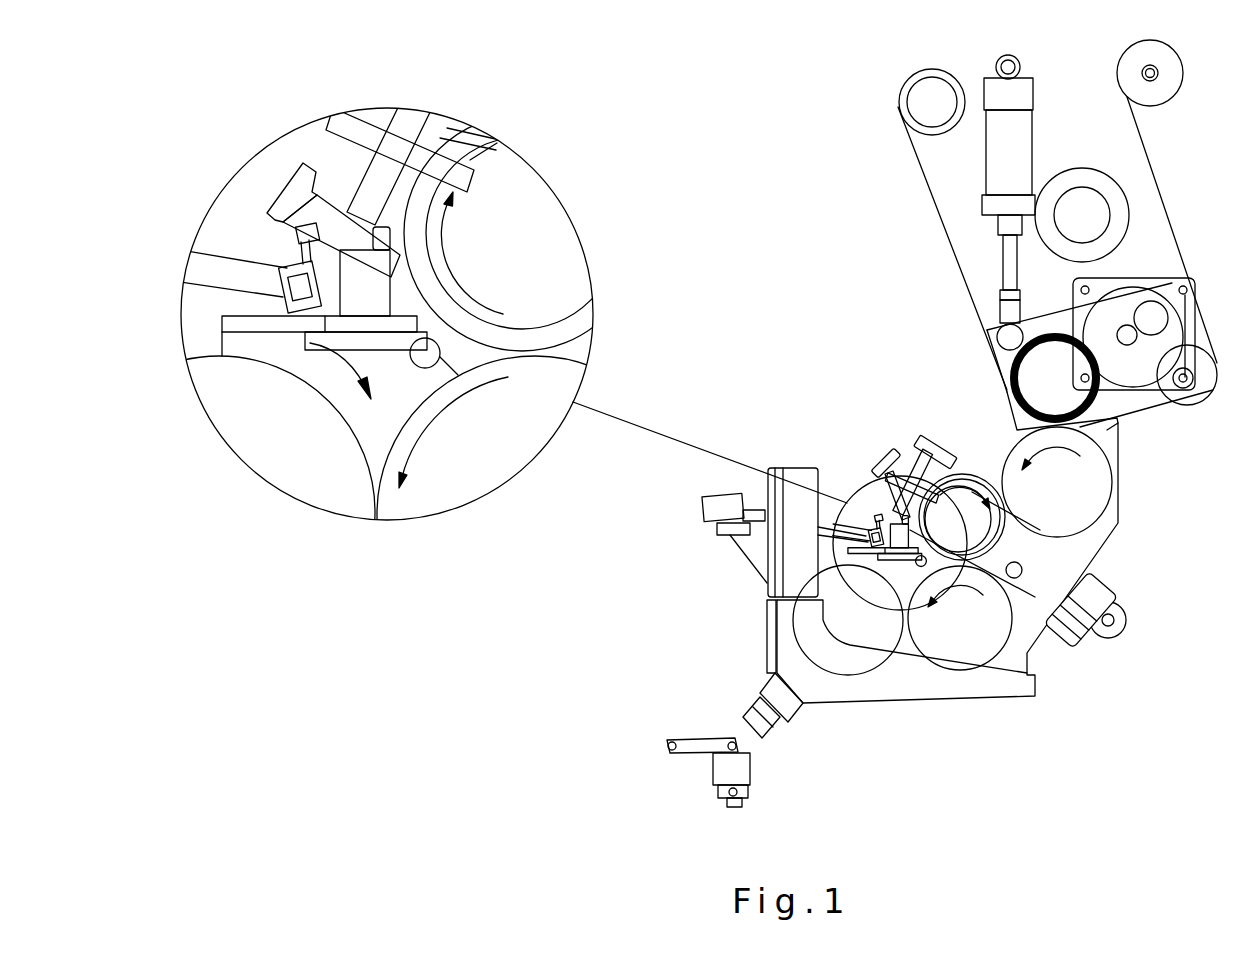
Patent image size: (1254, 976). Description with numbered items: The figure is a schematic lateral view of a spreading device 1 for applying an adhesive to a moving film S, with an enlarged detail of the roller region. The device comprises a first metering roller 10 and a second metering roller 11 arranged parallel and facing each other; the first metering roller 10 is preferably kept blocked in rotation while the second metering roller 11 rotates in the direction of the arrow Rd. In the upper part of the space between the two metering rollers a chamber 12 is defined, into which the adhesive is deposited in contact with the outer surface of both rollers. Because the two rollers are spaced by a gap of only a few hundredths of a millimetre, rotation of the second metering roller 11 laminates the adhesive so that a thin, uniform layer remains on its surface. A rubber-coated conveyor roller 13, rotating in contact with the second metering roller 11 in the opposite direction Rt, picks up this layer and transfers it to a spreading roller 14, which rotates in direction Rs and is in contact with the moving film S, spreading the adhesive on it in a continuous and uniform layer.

The spreading device 1 is at (848, 345).
The first metering roller 10 is at (277, 467).
The second metering roller 11 is at (487, 467).
The chamber 12 is at (263, 337).
The conveyor roller 13 is at (551, 232).
The spreading roller 14 is at (1085, 495).
The moving film S is at (930, 205).